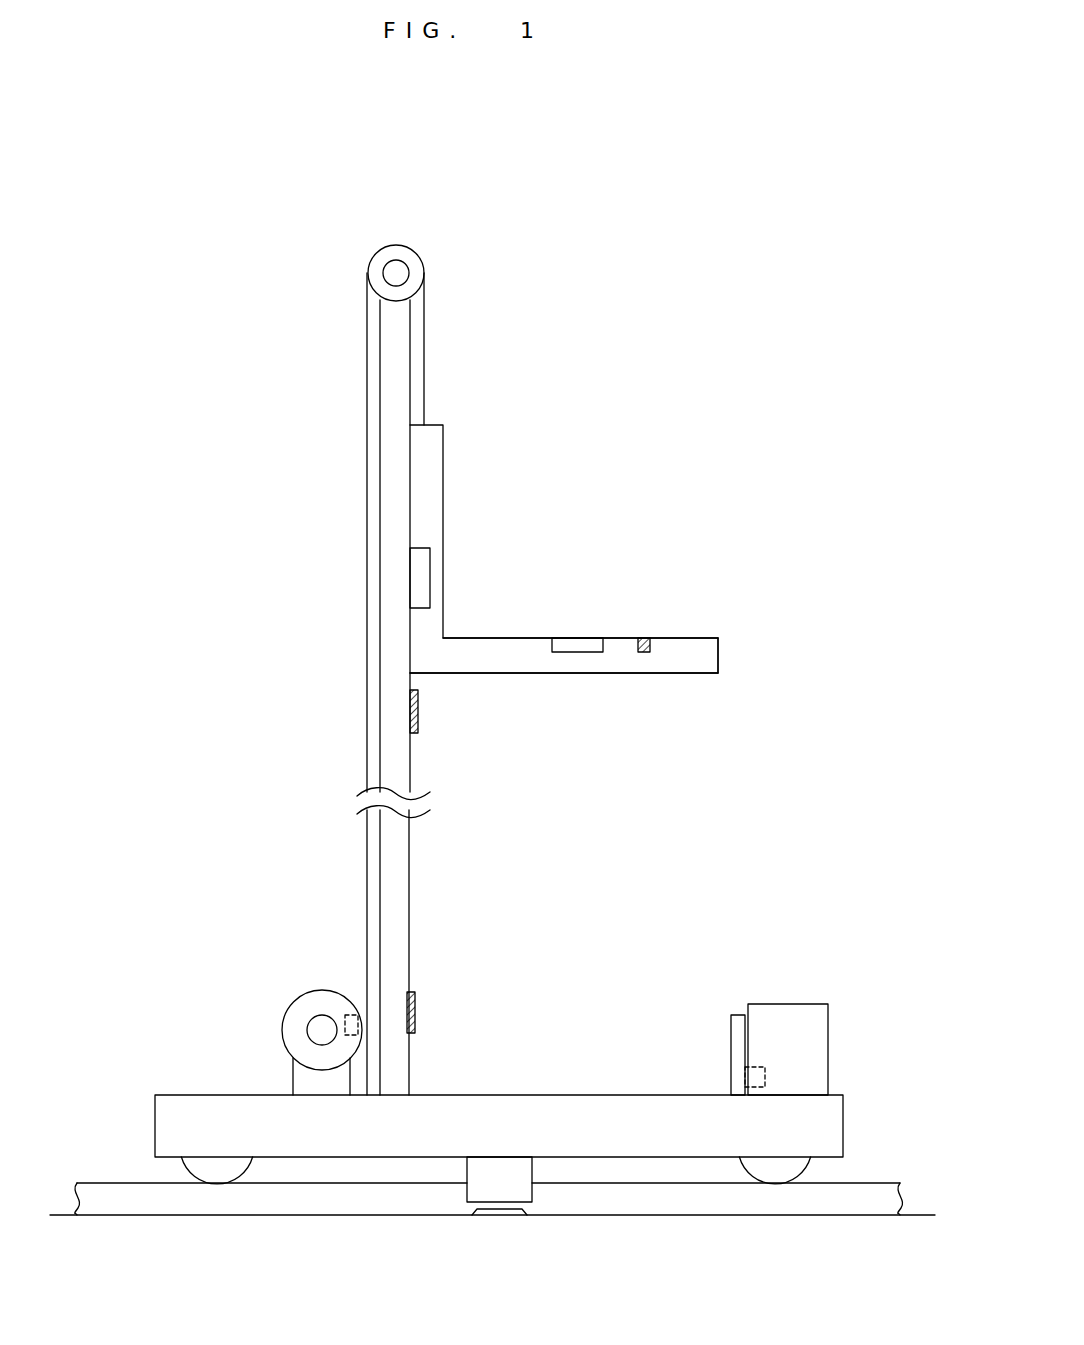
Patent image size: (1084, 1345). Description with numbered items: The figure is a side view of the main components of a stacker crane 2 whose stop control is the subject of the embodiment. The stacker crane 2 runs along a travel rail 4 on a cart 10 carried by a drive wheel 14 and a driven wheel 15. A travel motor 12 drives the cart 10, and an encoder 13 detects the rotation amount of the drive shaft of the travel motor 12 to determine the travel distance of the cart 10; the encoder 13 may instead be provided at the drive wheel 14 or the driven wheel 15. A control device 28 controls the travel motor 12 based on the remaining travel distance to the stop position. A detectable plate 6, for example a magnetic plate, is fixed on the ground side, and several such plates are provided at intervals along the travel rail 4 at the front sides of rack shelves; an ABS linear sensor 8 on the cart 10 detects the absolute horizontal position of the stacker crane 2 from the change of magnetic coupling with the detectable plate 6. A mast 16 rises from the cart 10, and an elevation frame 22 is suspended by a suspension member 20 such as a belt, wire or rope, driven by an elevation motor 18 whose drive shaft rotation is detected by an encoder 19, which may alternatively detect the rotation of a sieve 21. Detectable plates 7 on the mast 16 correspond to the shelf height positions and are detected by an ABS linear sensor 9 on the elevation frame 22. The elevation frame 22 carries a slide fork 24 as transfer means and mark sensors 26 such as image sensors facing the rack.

The stacker crane 2 is at (853, 1116).
The travel rail 4 is at (882, 1192).
The detectable plate 6 is at (500, 1213).
The detectable plates 7 is at (418, 712).
The ABS linear sensor 8 is at (478, 1190).
The ABS linear sensor 9 is at (430, 576).
The cart 10 is at (570, 1106).
The travel motor 12 is at (790, 1012).
The encoder 13 is at (735, 1072).
The drive wheel 14 is at (772, 1180).
The driven wheel 15 is at (214, 1175).
The mast 16 is at (398, 882).
The elevation motor 18 is at (305, 1002).
The encoder 19 is at (348, 1006).
The suspension member 20 is at (424, 355).
The sieve 21 is at (423, 263).
The elevation frame 22 is at (572, 662).
The slide fork 24 is at (577, 645).
The mark sensor 26 is at (650, 648).
The control device 28 is at (738, 1015).